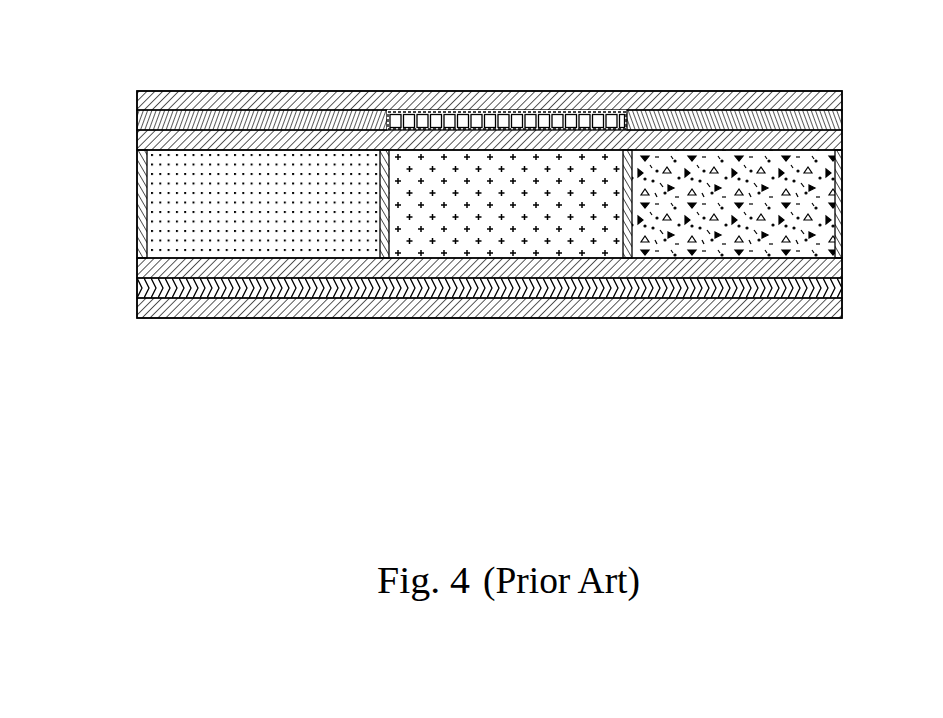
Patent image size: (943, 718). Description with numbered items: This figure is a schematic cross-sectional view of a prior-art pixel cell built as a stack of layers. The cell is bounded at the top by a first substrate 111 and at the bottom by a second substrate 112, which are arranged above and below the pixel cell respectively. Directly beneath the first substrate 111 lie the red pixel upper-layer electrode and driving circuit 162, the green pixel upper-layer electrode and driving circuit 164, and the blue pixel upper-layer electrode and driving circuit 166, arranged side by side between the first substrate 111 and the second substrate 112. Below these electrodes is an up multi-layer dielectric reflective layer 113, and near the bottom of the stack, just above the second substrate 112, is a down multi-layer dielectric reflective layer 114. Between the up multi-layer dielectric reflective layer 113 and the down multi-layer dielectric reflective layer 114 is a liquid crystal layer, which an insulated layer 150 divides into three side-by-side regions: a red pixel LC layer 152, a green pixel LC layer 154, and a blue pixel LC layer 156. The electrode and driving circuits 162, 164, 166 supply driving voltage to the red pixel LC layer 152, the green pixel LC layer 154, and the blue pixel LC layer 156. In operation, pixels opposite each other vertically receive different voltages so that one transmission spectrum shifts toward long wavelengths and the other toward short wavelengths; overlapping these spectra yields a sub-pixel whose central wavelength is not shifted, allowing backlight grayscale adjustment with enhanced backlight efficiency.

The first substrate 111 is at (173, 97).
The red pixel upper-layer electrode and driving circuit 162 is at (260, 120).
The green pixel upper-layer electrode and driving circuit 164 is at (497, 120).
The blue pixel upper-layer electrode and driving circuit 166 is at (737, 120).
The up multi-layer dielectric reflective layer 113 is at (137, 140).
The insulated layer 150 is at (137, 213).
The red pixel LC layer 152 is at (248, 242).
The green pixel LC layer 154 is at (485, 242).
The blue pixel LC layer 156 is at (718, 242).
The down multi-layer dielectric reflective layer 114 is at (137, 268).
The second substrate 112 is at (177, 310).